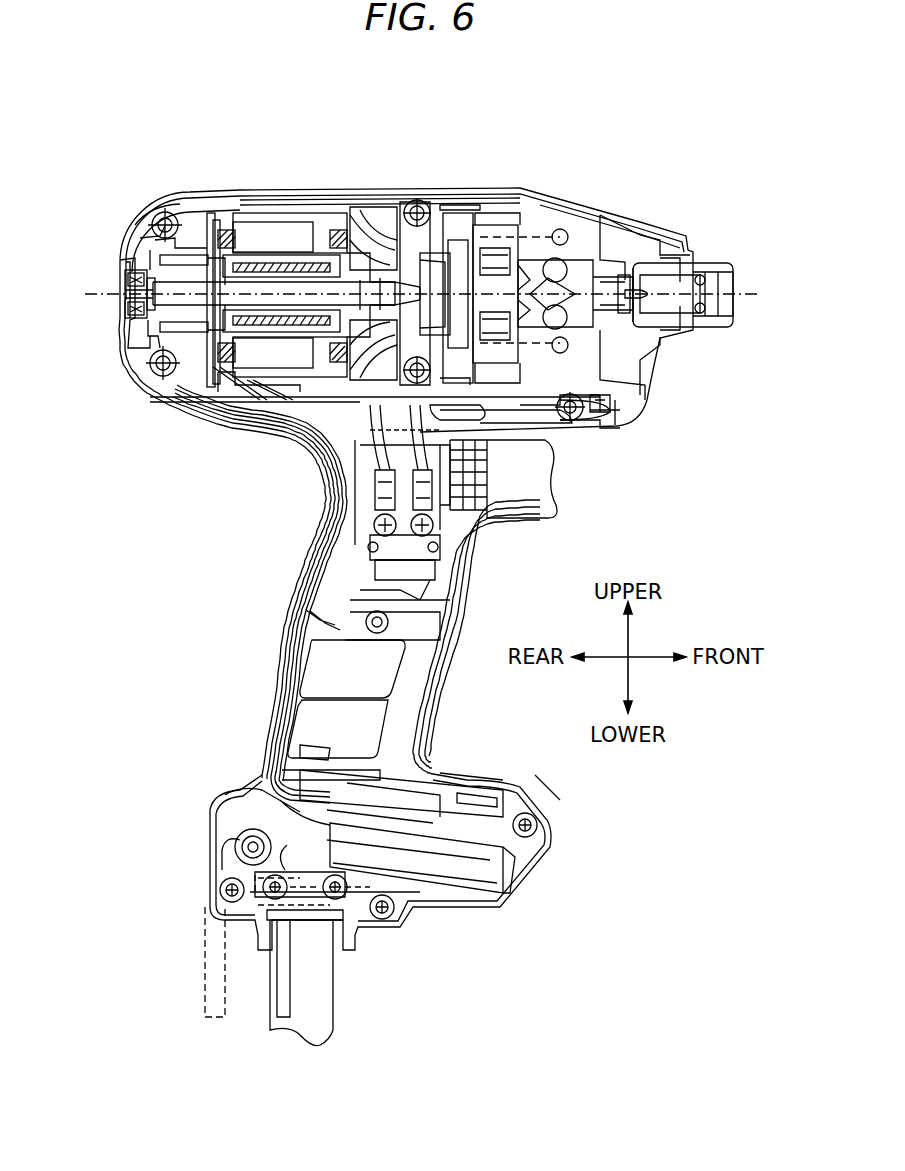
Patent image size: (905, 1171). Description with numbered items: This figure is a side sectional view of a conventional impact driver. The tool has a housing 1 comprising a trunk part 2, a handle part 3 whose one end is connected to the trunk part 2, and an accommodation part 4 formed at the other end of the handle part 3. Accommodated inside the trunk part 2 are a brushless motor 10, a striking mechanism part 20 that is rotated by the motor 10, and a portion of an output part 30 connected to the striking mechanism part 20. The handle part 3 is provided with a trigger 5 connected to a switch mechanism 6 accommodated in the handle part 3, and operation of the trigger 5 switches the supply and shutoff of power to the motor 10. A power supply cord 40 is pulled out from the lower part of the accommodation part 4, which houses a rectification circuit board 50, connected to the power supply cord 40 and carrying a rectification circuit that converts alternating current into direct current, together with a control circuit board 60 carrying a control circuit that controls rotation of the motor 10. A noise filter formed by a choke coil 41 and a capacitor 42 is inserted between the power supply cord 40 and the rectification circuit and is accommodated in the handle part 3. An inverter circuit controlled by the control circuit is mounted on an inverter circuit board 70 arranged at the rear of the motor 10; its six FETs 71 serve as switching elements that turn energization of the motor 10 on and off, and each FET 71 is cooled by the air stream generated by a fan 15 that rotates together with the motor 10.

The housing 1 is at (234, 180).
The trunk part 2 is at (538, 190).
The handle part 3 is at (300, 575).
The accommodation part 4 is at (545, 850).
The trigger 5 is at (537, 475).
The switch mechanism 6 is at (440, 507).
The brushless motor 10 is at (298, 222).
The fan 15 is at (372, 220).
The striking mechanism part 20 is at (503, 214).
The output part 30 is at (652, 248).
The power supply cord 40 is at (343, 1003).
The choke coil 41 is at (310, 720).
The capacitor 42 is at (315, 660).
The rectification circuit board 50 is at (495, 872).
The control circuit board 60 is at (420, 793).
The inverter circuit board 70 is at (228, 232).
The FET 71 is at (125, 318).